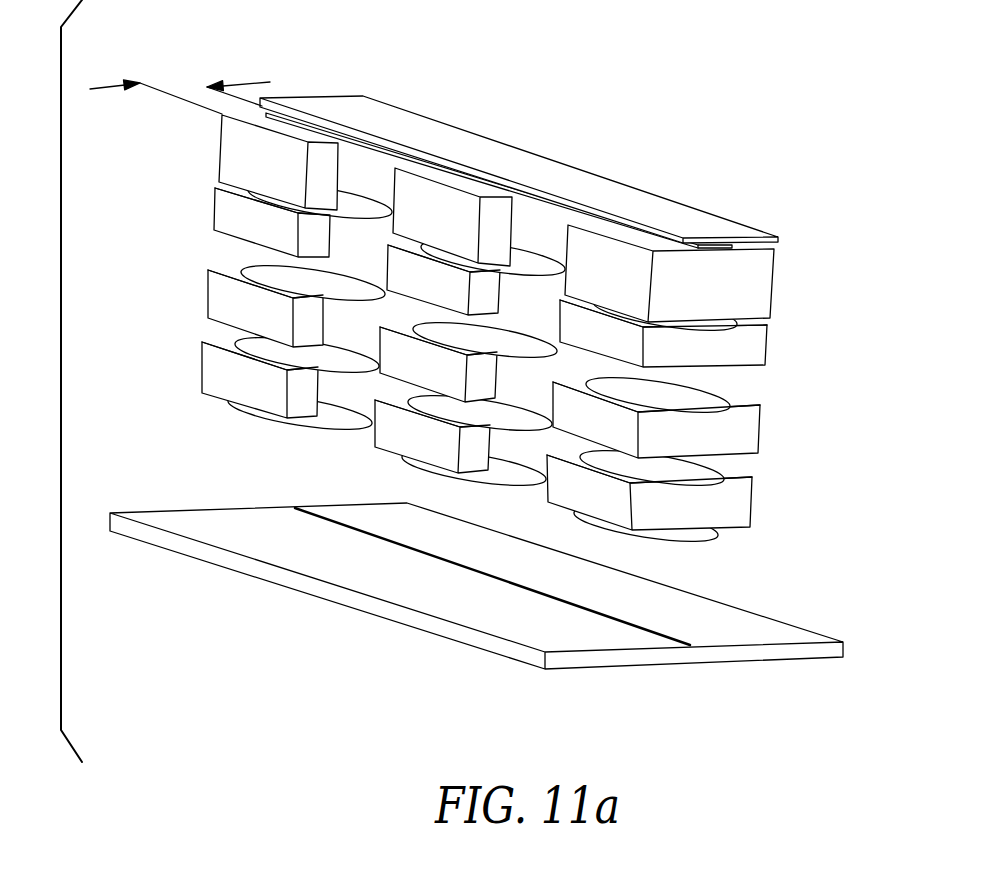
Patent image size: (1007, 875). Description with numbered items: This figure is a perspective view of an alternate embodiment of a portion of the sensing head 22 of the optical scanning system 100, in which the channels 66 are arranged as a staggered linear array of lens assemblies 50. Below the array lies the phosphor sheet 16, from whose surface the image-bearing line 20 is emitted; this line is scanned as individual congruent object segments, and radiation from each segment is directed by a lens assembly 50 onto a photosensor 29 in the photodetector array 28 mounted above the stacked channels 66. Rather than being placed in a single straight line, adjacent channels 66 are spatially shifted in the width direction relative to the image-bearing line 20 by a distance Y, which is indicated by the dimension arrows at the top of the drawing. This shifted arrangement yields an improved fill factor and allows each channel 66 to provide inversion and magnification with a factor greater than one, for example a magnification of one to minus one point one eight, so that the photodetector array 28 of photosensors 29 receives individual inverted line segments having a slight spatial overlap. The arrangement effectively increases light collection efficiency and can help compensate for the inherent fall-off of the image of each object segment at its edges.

The optical scanning system 100 is at (457, 277).
The phosphor sheet 16 is at (491, 634).
The image-bearing line 20 is at (690, 644).
The sensing head 22 is at (433, 332).
The photodetector array 28 is at (722, 184).
The photosensor 29 is at (537, 170).
The lens assembly 50 is at (355, 418).
The channel 66 is at (353, 338).
The distance Y is at (190, 88).